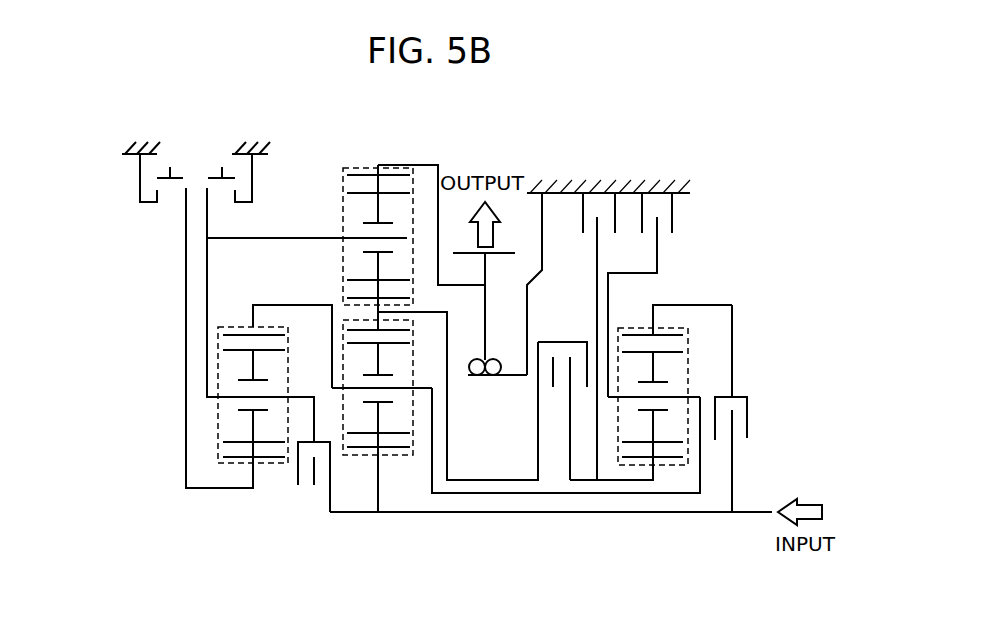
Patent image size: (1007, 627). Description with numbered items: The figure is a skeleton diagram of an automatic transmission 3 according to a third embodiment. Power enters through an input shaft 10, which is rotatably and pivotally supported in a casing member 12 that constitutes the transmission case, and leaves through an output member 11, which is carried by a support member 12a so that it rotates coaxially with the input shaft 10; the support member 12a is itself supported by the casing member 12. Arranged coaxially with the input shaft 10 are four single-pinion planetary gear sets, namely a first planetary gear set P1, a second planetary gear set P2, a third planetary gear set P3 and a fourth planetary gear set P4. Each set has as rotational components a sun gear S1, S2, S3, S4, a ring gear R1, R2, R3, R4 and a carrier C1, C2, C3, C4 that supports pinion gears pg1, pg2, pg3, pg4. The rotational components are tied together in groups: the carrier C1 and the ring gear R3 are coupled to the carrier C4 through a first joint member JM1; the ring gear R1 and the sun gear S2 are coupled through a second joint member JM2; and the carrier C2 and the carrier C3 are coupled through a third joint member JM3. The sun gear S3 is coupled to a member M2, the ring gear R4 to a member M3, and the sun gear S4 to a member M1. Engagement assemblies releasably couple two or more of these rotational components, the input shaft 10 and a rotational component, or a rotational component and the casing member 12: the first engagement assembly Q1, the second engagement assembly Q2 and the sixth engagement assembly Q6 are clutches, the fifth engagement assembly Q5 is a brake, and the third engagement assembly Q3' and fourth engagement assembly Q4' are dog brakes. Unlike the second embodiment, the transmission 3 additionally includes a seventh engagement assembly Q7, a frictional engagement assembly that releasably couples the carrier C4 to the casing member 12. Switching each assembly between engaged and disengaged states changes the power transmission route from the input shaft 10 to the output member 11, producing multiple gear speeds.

The automatic transmission 3 is at (705, 153).
The input shaft 10 is at (640, 515).
The output member 11 is at (487, 298).
The casing member 12 is at (135, 150).
The support member 12a is at (545, 251).
The first planetary gear set P1 is at (435, 398).
The second planetary gear set P2 is at (346, 227).
The third planetary gear set P3 is at (228, 396).
The fourth planetary gear set P4 is at (700, 409).
The sun gear S1 is at (352, 450).
The sun gear S2 is at (350, 297).
The sun gear S3 is at (271, 462).
The sun gear S4 is at (672, 462).
The ring gear R1 is at (407, 310).
The ring gear R2 is at (352, 176).
The ring gear R3 is at (229, 333).
The ring gear R4 is at (667, 333).
The carrier C1 is at (396, 388).
The carrier C2 is at (352, 238).
The carrier C3 is at (273, 397).
The carrier C4 is at (667, 397).
The pinion gear pg1 is at (378, 413).
The pinion gear pg2 is at (378, 263).
The pinion gear pg3 is at (253, 424).
The pinion gear pg4 is at (653, 425).
The first engagement assembly Q1 is at (309, 462).
The second engagement assembly Q2 is at (747, 408).
The third engagement assembly Q3' is at (261, 173).
The fourth engagement assembly Q4' is at (134, 178).
The fifth engagement assembly Q5 is at (578, 340).
The sixth engagement assembly Q6 is at (558, 360).
The seventh engagement assembly Q7 is at (668, 222).
The member M1 is at (585, 482).
The member M2 is at (207, 490).
The member M3 is at (723, 303).
The first joint member JM1 is at (496, 498).
The second joint member JM2 is at (512, 478).
The third joint member JM3 is at (207, 305).